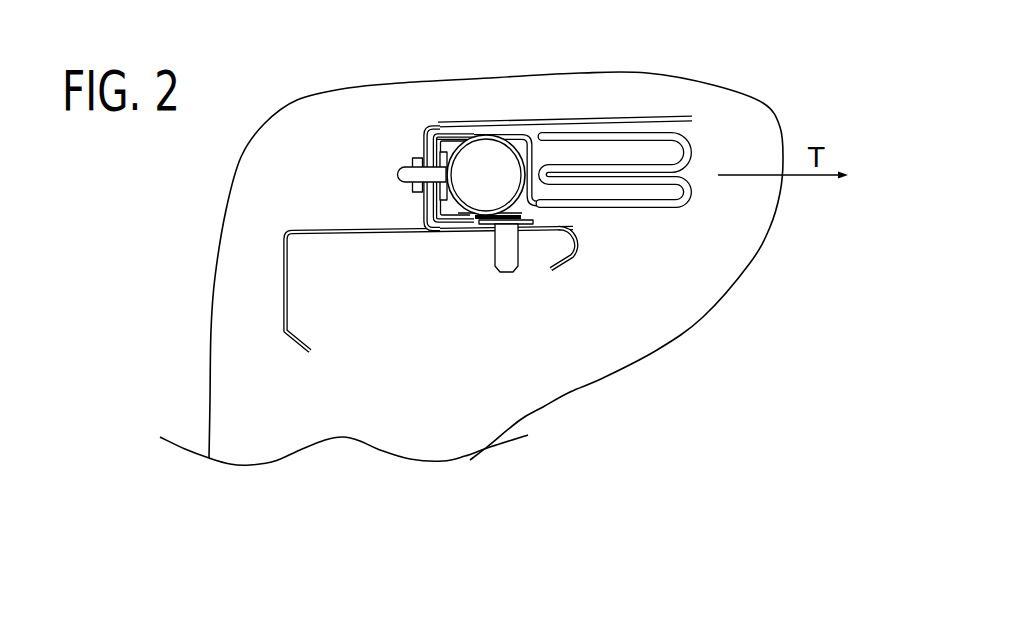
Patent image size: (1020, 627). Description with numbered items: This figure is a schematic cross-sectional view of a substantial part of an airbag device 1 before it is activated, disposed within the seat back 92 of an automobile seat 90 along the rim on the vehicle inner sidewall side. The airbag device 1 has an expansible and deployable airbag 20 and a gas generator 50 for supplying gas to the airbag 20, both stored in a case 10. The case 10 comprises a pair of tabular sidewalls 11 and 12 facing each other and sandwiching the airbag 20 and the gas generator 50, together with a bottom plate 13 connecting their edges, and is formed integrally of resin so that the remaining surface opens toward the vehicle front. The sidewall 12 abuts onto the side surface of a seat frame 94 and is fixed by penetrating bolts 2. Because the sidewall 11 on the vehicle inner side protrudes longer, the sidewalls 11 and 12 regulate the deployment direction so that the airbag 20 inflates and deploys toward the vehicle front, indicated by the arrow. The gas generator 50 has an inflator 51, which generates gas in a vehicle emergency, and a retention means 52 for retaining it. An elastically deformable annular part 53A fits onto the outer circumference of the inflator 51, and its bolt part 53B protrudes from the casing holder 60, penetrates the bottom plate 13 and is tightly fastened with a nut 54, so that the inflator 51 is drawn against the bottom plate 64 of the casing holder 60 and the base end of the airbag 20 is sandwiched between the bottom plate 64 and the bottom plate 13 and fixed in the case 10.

The airbag device 1 is at (634, 186).
The penetrating bolt 2 is at (508, 274).
The case 10 is at (634, 125).
The sidewall 11 is at (626, 126).
The sidewall 12 is at (576, 229).
The bottom plate 13 is at (471, 274).
The airbag 20 is at (690, 205).
The gas generator 50 is at (420, 159).
The inflator 51 is at (492, 150).
The retention means 52 is at (436, 119).
The annular part 53A is at (479, 117).
The bolt part 53B is at (397, 175).
The nut 54 is at (412, 159).
The casing holder 60 is at (448, 210).
The bottom plate 64 is at (435, 145).
The seat 90 is at (757, 265).
The seat back 92 is at (238, 308).
The seat frame 94 is at (388, 234).